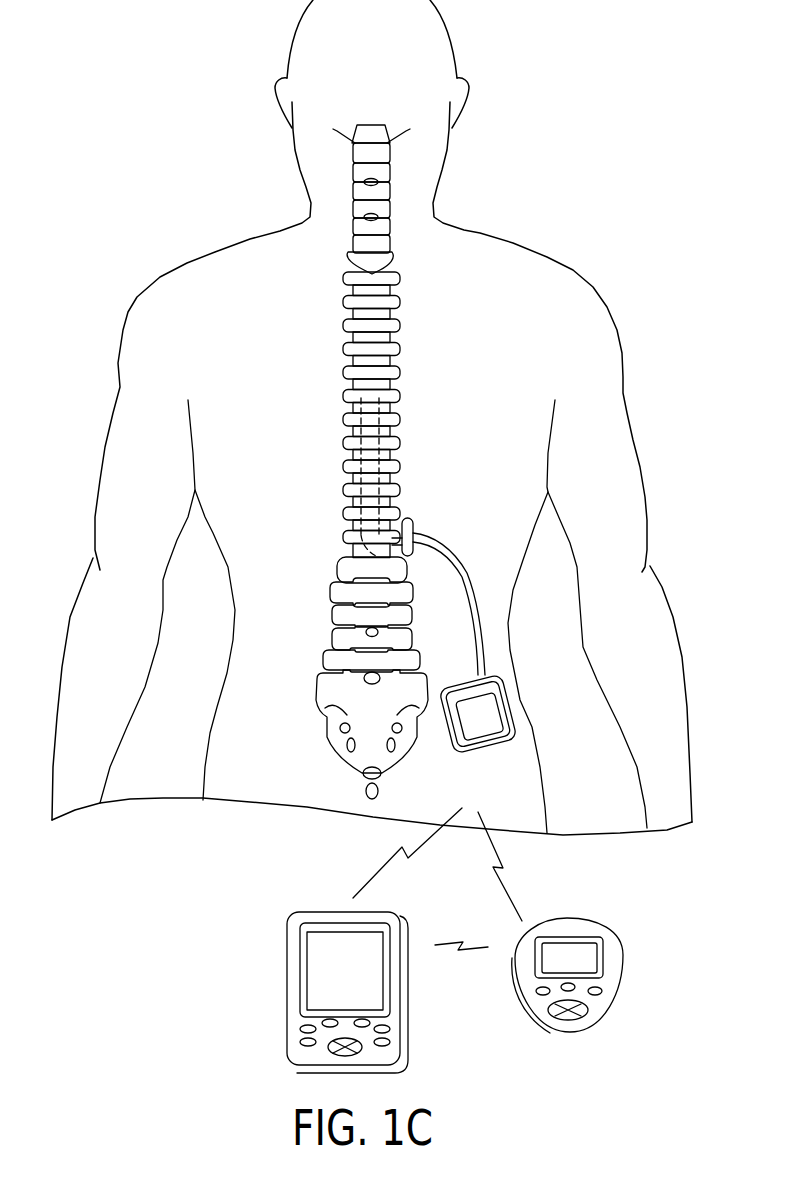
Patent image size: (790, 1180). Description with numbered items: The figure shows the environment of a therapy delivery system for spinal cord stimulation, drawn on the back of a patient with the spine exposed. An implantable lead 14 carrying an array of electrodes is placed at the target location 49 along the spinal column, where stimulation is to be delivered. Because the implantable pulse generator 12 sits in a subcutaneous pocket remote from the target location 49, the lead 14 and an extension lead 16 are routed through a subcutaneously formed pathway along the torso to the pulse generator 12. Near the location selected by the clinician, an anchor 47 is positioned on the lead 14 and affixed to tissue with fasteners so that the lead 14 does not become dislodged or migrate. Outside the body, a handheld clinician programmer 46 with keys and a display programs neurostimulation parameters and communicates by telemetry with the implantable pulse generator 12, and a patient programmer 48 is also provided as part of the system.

The implantable pulse generator 12 is at (505, 684).
The implantable lead 14 is at (388, 460).
The implantable extension lead 16 is at (461, 600).
The clinician programmer 46 is at (287, 966).
The anchor 47 is at (413, 524).
The patient programmer 48 is at (620, 943).
The target location 49 is at (336, 461).